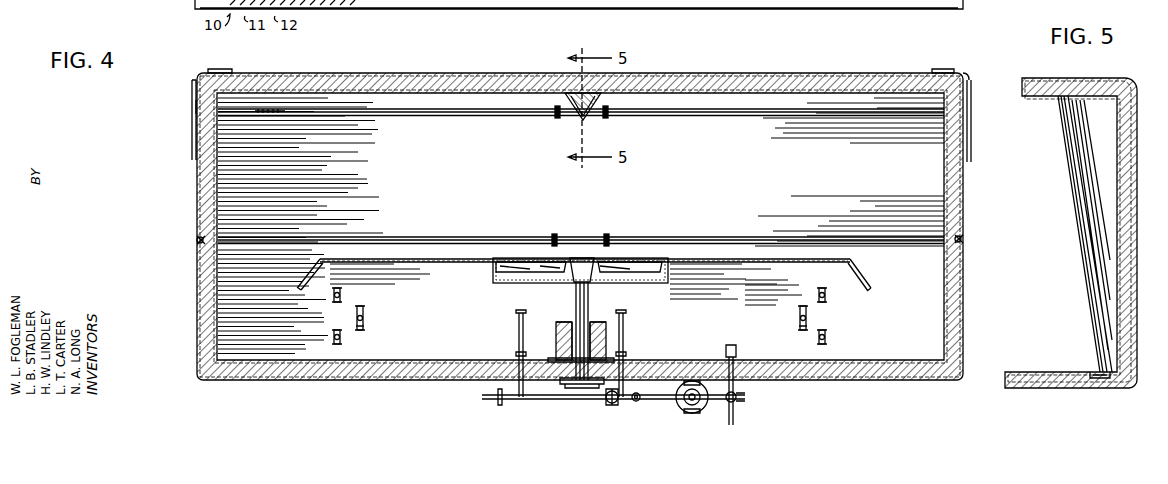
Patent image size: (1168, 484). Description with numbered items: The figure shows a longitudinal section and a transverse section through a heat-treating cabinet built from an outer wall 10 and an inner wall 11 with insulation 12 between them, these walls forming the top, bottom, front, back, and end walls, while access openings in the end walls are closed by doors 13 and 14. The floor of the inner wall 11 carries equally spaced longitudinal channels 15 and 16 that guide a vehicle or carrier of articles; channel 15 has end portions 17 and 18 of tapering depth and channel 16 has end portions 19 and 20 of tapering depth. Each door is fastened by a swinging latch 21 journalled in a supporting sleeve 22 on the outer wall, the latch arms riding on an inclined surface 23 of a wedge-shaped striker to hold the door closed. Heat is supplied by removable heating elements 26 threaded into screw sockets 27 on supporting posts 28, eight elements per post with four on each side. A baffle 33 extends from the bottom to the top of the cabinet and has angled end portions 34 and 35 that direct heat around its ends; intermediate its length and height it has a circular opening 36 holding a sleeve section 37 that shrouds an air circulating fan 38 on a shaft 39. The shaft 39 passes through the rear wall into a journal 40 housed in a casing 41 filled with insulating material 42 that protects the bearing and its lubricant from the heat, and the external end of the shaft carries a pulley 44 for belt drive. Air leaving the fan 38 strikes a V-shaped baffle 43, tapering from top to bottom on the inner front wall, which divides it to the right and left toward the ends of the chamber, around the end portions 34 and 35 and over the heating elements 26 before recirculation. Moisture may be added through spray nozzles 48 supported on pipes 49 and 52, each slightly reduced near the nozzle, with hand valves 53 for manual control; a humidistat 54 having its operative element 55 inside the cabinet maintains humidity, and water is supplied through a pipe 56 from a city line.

In FIG. 4, the outer wall 10 is at (490, 73).
In FIG. 5, the outer wall 10 is at (1069, 78).
In FIG. 4, the inner wall 11 is at (400, 360).
In FIG. 5, the inner wall 11 is at (1022, 91).
In FIG. 4, the insulation 12 is at (456, 380).
In FIG. 5, the insulation 12 is at (1145, 94).
In FIG. 4, the door 13 is at (194, 178).
In FIG. 4, the door 14 is at (962, 178).
In FIG. 4, the channel 15 is at (497, 113).
In FIG. 5, the channel 15 is at (1095, 372).
In FIG. 4, the channel 16 is at (690, 236).
In FIG. 4, the end portion 17 is at (266, 108).
In FIG. 4, the end portion 18 is at (902, 115).
In FIG. 4, the end portion 19 is at (216, 234).
In FIG. 4, the end portion 20 is at (890, 244).
In FIG. 4, the swinging latch 21 is at (192, 130).
In FIG. 4, the supporting sleeve 22 is at (232, 69).
In FIG. 4, the inclined surface 23 is at (194, 106).
In FIG. 4, the heating element 26 is at (361, 305).
In FIG. 4, the screw socket 27 is at (363, 318).
In FIG. 4, the supporting post 28 is at (361, 326).
In FIG. 4, the baffle 33 is at (804, 262).
In FIG. 4, the end portion 34 is at (310, 262).
In FIG. 4, the end portion 35 is at (857, 272).
In FIG. 4, the circular opening 36 is at (666, 260).
In FIG. 4, the sleeve section 37 is at (494, 270).
In FIG. 4, the air circulating fan 38 is at (550, 276).
In FIG. 4, the shaft 39 is at (588, 288).
In FIG. 4, the journal 40 is at (558, 338).
In FIG. 4, the casing 41 is at (564, 322).
In FIG. 4, the insulating material 42 is at (594, 324).
In FIG. 4, the V-shaped baffle 43 is at (583, 118).
In FIG. 5, the V-shaped baffle 43 is at (1066, 170).
In FIG. 4, the pulley 44 is at (574, 400).
In FIG. 4, the spray nozzle 48 is at (516, 311).
In FIG. 4, the pipe 49 is at (517, 337).
In FIG. 4, the pipe 52 is at (624, 340).
In FIG. 4, the hand valve 53 is at (498, 398).
In FIG. 4, the humidistat 54 is at (688, 409).
In FIG. 4, the operative element 55 is at (732, 344).
In FIG. 4, the pipe 56 is at (747, 397).